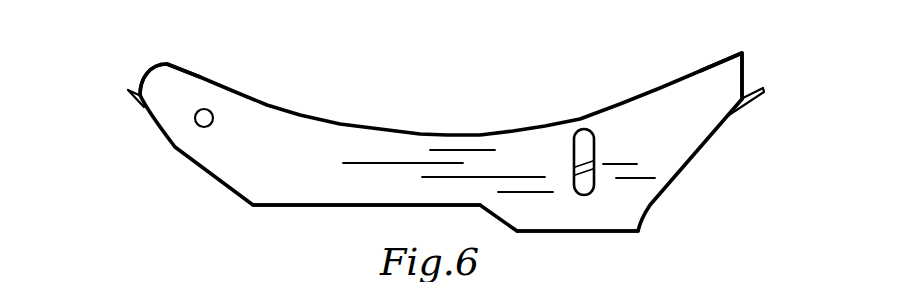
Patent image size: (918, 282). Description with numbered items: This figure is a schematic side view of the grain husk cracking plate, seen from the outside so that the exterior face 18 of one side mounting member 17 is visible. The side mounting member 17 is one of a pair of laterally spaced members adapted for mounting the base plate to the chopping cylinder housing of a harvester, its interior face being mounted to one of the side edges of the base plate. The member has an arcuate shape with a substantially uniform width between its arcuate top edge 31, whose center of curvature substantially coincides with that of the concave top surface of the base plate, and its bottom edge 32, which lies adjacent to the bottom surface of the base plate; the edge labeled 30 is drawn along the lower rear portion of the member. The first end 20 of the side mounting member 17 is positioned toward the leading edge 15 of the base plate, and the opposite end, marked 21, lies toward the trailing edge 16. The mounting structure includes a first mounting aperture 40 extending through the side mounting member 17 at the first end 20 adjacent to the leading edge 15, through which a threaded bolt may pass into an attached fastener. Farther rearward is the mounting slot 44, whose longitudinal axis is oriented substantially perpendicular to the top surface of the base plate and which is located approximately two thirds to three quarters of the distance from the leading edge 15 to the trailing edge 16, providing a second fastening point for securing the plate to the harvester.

The leading edge 15 is at (128, 89).
The trailing edge 16 is at (765, 89).
The side mounting member 17 is at (283, 143).
The exterior face 18 is at (430, 152).
The first end 20 is at (157, 77).
The rear end 21 is at (745, 71).
The rear bottom surface 30 is at (627, 256).
The top edge 31 is at (533, 125).
The bottom edge 32 is at (336, 207).
The first mounting aperture 40 is at (212, 112).
The mounting slot 44 is at (597, 143).